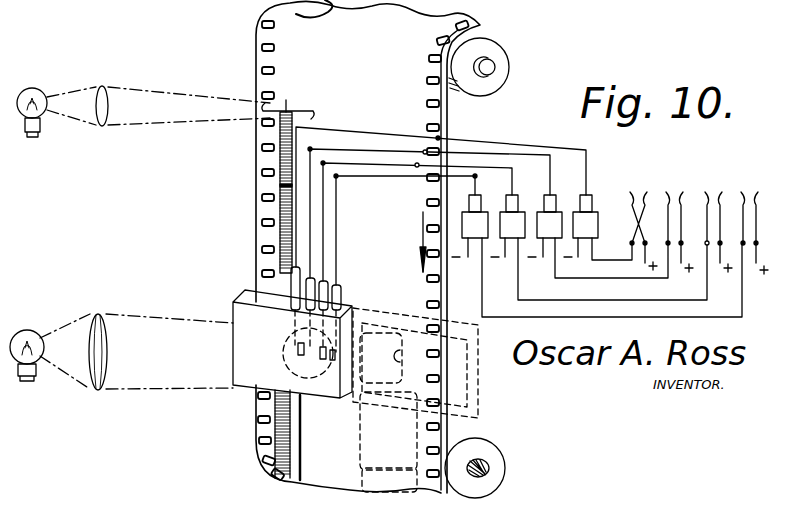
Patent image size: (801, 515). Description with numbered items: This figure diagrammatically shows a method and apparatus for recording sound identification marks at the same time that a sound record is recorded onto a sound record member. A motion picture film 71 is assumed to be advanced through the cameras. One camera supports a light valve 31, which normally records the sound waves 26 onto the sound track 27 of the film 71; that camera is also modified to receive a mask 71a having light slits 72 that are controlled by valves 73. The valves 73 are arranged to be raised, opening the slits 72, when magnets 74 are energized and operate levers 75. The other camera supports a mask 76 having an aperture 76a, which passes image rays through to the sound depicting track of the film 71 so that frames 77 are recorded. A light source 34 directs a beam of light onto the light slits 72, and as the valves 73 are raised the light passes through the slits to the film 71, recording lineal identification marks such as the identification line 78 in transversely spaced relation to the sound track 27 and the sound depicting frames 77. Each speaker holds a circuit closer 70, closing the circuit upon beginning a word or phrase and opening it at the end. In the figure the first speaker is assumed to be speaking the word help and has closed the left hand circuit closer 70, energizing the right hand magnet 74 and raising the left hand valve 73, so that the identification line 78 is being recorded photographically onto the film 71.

The light source 34 is at (38, 92).
The motion picture film 71 is at (292, 62).
The light valve 31 is at (290, 97).
The sound waves 26 is at (280, 150).
The sound track 27 is at (280, 183).
The valves 73 is at (306, 290).
The mask 71a is at (242, 314).
The light slits 72 is at (328, 366).
The identification line 78 is at (302, 430).
The frames 77 is at (362, 447).
The levers 75 is at (350, 129).
The magnets 74 is at (597, 256).
The circuit closer 70 is at (636, 193).
The mask 76 is at (478, 411).
The aperture 76a is at (405, 367).